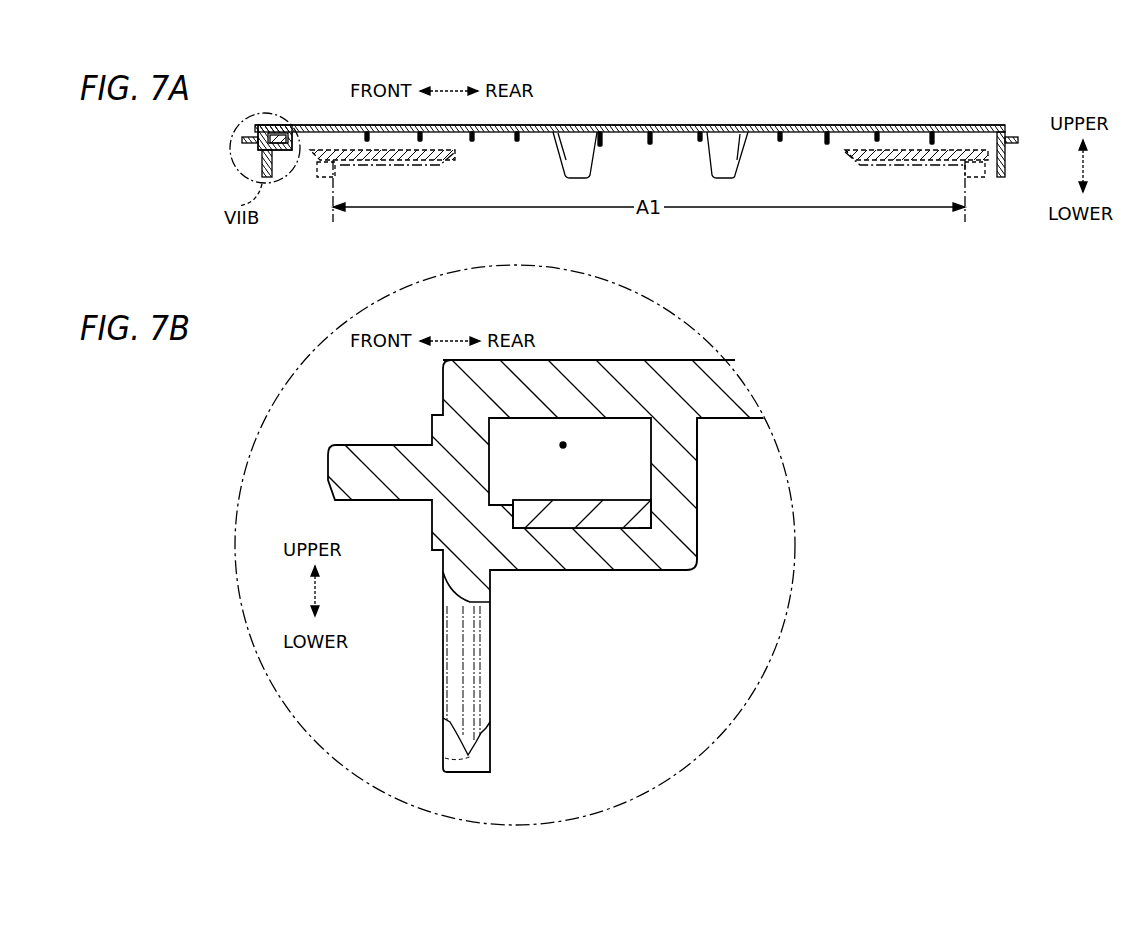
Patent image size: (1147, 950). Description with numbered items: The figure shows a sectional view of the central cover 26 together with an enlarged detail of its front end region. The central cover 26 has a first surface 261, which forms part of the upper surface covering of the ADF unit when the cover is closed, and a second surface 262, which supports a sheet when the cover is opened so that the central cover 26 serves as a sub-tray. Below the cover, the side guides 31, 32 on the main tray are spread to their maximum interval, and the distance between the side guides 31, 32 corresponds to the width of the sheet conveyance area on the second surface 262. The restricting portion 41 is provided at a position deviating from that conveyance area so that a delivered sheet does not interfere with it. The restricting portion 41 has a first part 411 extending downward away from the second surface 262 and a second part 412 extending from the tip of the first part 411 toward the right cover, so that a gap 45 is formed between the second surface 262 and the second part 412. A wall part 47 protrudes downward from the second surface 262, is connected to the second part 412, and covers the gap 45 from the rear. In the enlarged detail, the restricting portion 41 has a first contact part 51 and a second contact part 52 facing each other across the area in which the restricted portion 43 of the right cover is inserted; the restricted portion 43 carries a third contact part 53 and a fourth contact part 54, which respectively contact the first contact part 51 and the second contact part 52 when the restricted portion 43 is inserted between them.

In FIG. 7A, the central cover 26 is at (955, 126).
In FIG. 7A, the first surface 261 is at (636, 125).
In FIG. 7A, the second surface 262 is at (637, 133).
In FIG. 7B, the second surface 262 is at (548, 419).
In FIG. 7A, the side guide 31 is at (322, 178).
In FIG. 7A, the side guide 32 is at (975, 180).
In FIG. 7A, the restricting portion 41 is at (290, 145).
In FIG. 7B, the restricting portion 41 is at (684, 548).
In FIG. 7B, the first part 411 is at (613, 443).
In FIG. 7B, the second part 412 is at (582, 570).
In FIG. 7A, the restricted portion 43 is at (276, 134).
In FIG. 7B, the restricted portion 43 is at (578, 512).
In FIG. 7B, the gap 45 is at (563, 445).
In FIG. 7B, the wall part 47 is at (682, 468).
In FIG. 7B, the first contact part 51 is at (520, 512).
In FIG. 7B, the second contact part 52 is at (640, 512).
In FIG. 7B, the third contact part 53 is at (506, 512).
In FIG. 7B, the fourth contact part 54 is at (654, 515).